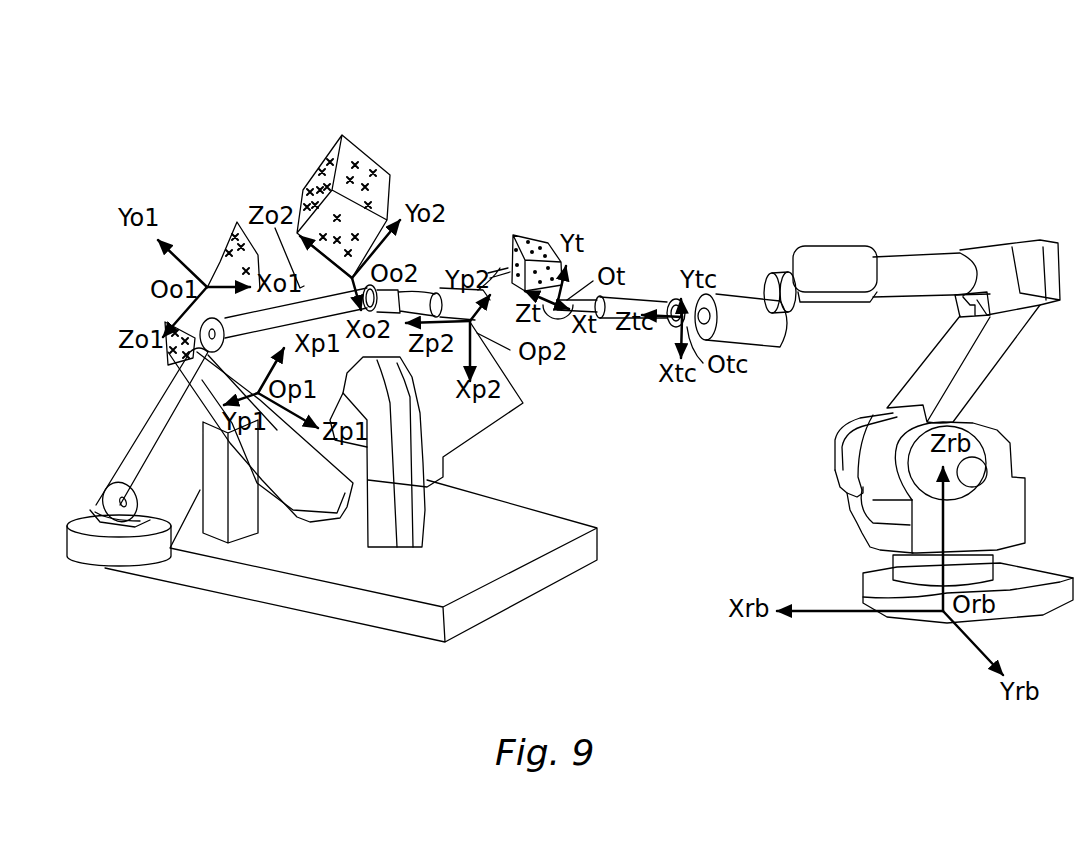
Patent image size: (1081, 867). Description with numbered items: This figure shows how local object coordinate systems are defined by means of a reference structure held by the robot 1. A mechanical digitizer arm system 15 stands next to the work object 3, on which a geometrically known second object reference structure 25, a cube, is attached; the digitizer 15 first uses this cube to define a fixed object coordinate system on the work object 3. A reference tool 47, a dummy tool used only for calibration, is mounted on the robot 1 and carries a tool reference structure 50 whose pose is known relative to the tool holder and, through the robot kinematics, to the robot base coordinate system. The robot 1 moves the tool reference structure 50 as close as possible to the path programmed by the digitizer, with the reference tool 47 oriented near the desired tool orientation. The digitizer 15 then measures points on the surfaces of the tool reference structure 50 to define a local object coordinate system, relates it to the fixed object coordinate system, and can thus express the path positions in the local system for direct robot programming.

The robot 1 is at (1030, 393).
The work object 3 is at (460, 430).
The mechanical digitizer arm system 15 is at (138, 408).
The second object reference structure 25 is at (367, 157).
The reference tool 47 is at (557, 325).
The tool reference structure 50 is at (520, 233).